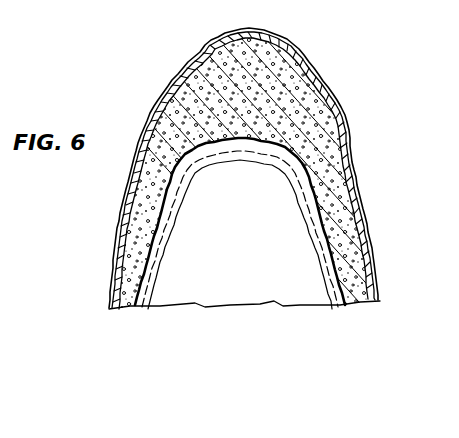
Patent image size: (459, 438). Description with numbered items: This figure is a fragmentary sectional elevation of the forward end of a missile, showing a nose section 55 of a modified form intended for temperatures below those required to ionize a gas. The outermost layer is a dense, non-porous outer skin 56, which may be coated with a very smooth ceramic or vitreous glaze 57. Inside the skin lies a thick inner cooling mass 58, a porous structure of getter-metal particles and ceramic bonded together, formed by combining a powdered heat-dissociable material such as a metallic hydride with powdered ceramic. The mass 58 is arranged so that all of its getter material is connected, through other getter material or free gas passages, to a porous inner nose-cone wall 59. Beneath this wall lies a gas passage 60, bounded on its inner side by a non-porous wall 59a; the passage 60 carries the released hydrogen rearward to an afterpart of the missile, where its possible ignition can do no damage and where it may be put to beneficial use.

The nose section 55 is at (367, 55).
The outer skin 56 is at (343, 120).
The ceramic or vitreous glaze 57 is at (288, 40).
The inner cooling mass 58 is at (353, 147).
The porous inner nose-cone wall 59 is at (357, 230).
The non-porous wall 59a is at (293, 179).
The gas passage 60 is at (358, 261).